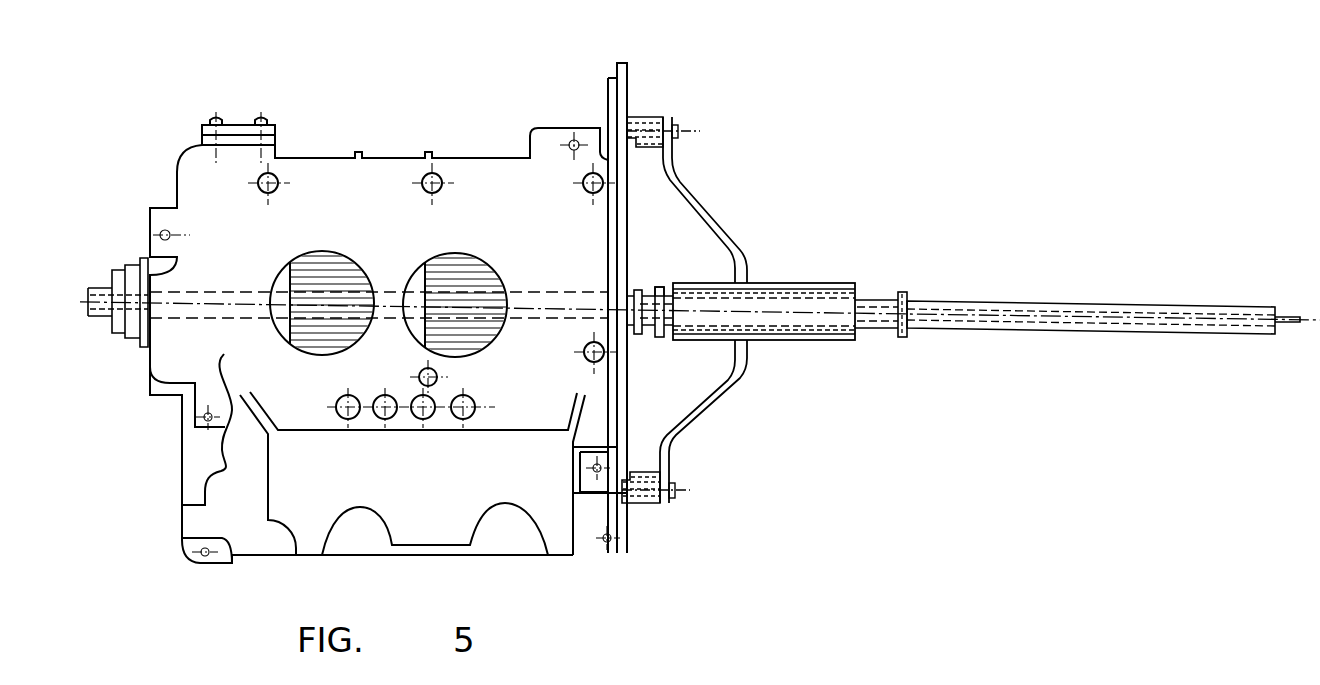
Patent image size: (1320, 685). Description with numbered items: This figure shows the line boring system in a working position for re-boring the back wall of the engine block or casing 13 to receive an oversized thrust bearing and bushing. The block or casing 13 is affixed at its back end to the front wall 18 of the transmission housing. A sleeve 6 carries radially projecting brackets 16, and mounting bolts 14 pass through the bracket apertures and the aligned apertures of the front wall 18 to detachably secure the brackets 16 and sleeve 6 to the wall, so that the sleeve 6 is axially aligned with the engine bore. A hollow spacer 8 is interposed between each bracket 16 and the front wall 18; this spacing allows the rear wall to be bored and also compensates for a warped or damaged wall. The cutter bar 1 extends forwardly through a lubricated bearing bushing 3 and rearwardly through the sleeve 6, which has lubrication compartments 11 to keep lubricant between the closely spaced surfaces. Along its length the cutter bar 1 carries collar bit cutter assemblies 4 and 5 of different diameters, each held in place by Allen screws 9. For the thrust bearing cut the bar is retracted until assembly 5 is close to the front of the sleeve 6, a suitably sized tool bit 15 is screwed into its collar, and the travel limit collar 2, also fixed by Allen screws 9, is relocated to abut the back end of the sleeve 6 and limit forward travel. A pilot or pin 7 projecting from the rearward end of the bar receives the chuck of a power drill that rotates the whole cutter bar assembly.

The cutter bar 1 is at (86, 318).
The travel limit collar 2 is at (896, 288).
The lubricated bearing bushing 3 is at (117, 338).
The collar bit cutter assembly 4 is at (638, 341).
The collar bit cutter assembly 5 is at (662, 340).
The sleeve 6 is at (754, 283).
The pilot or pin 7 is at (1289, 325).
The hollow spacer 8 is at (645, 114).
The Allen screw 9 is at (898, 326).
The lubrication compartment 11 is at (717, 285).
The engine block or casing 13 is at (302, 208).
The mounting bolt 14 is at (681, 116).
The tool bit 15 is at (659, 283).
The bracket 16 is at (694, 192).
The front wall 18 is at (626, 405).